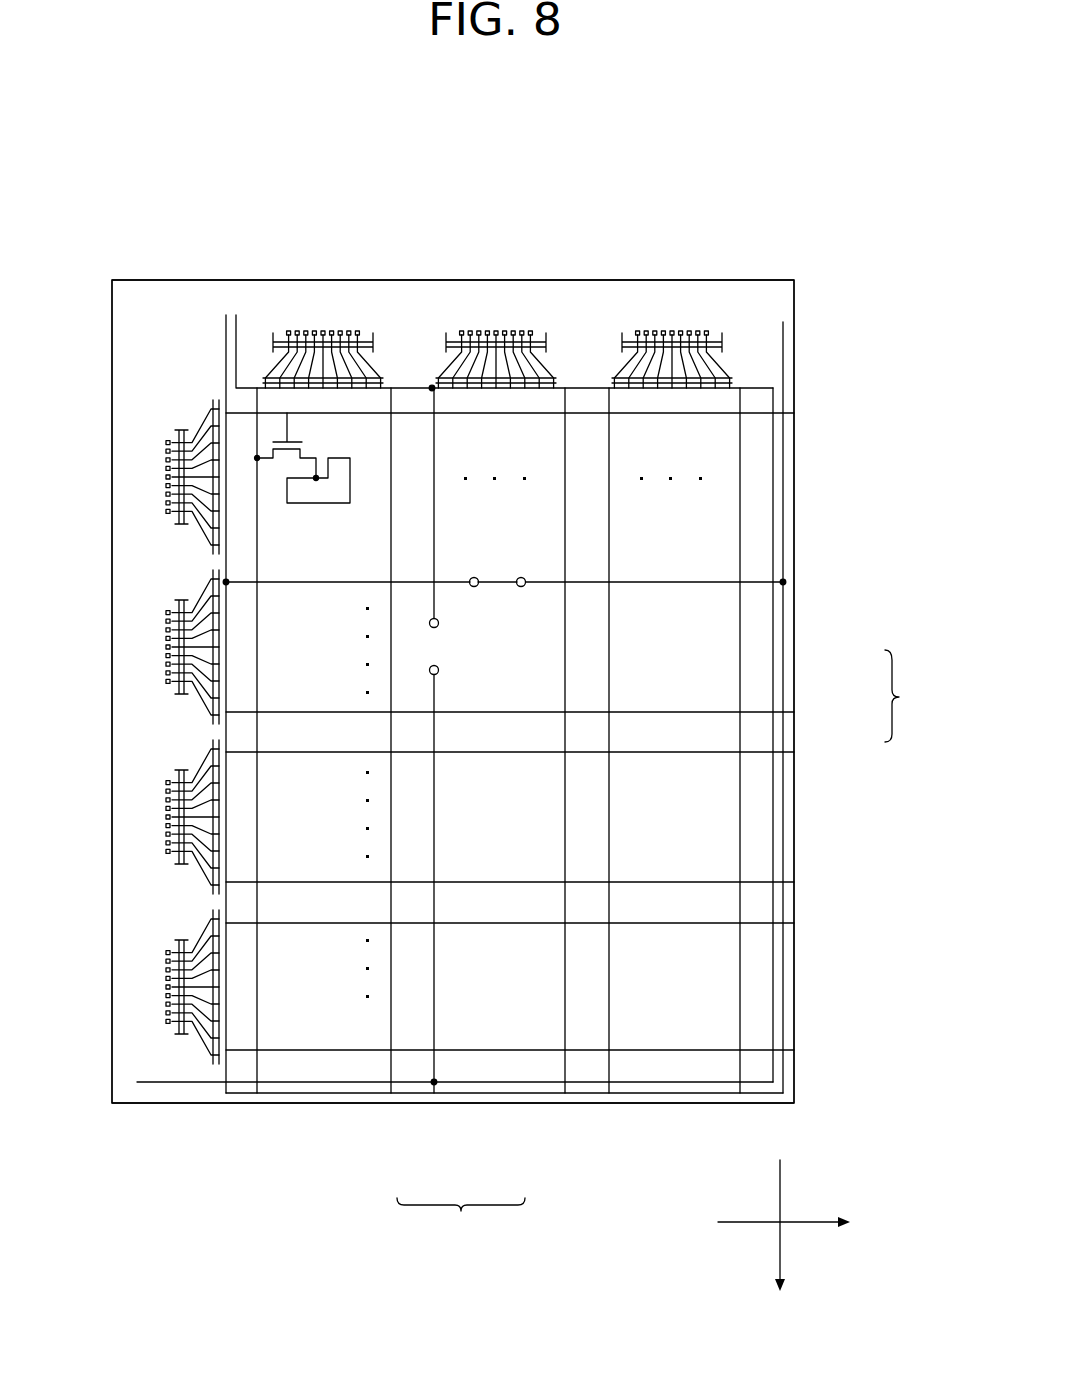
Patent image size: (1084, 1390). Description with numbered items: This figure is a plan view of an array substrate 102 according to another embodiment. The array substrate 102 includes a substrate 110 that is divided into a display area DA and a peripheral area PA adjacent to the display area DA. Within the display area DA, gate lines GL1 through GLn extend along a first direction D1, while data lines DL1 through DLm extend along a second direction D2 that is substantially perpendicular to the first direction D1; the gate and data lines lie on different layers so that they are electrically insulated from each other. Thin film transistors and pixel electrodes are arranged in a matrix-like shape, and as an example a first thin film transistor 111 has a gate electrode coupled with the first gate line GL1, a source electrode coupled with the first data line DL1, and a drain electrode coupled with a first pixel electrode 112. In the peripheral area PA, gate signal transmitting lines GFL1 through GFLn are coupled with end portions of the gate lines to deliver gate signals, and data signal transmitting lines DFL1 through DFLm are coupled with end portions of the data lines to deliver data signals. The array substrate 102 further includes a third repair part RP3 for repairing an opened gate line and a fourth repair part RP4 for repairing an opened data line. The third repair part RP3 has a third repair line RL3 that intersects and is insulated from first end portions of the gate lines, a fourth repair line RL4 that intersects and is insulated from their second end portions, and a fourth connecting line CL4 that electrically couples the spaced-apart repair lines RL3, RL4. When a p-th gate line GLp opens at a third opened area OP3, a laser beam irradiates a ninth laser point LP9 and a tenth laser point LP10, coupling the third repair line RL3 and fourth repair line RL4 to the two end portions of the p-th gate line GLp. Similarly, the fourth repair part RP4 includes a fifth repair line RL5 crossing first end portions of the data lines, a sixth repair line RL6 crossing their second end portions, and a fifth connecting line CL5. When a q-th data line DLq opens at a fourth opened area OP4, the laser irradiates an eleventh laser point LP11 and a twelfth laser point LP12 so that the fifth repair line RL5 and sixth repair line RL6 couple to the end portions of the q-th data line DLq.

The array substrate 102 is at (524, 121).
The substrate 110 is at (795, 326).
The first thin film transistor 111 is at (306, 434).
The first pixel electrode 112 is at (350, 487).
The display area DA is at (690, 834).
The peripheral area PA is at (150, 1000).
The first gate line GL1 is at (487, 415).
The p-th gate line GLp is at (625, 588).
The n-th gate line GLn is at (498, 1048).
The first data line DL1 is at (258, 523).
The q-th data line DLq is at (436, 823).
The m-th data line DLm is at (740, 519).
The third opened area OP3 is at (504, 598).
The fourth opened area OP4 is at (452, 656).
The ninth laser point LP9 is at (236, 592).
The tenth laser point LP10 is at (777, 593).
The eleventh laser point LP11 is at (430, 388).
The twelfth laser point LP12 is at (433, 1080).
The third repair line RL3 is at (228, 1059).
The fourth connecting line CL4 is at (460, 1094).
The fourth repair line RL4 is at (787, 1068).
The third repair part RP3 is at (461, 1217).
The fifth repair line RL5 is at (713, 390).
The fifth connecting line CL5 is at (773, 693).
The sixth repair line RL6 is at (687, 1082).
The fourth repair part RP4 is at (911, 696).
The first data signal transmitting line DFL1 is at (288, 374).
The m-th data signal transmitting line DFLm is at (741, 368).
The first gate signal transmitting line GFL1 is at (210, 437).
The n-th gate signal transmitting line GFLn is at (221, 1065).
The first direction D1 is at (801, 1223).
The second direction D2 is at (783, 1298).